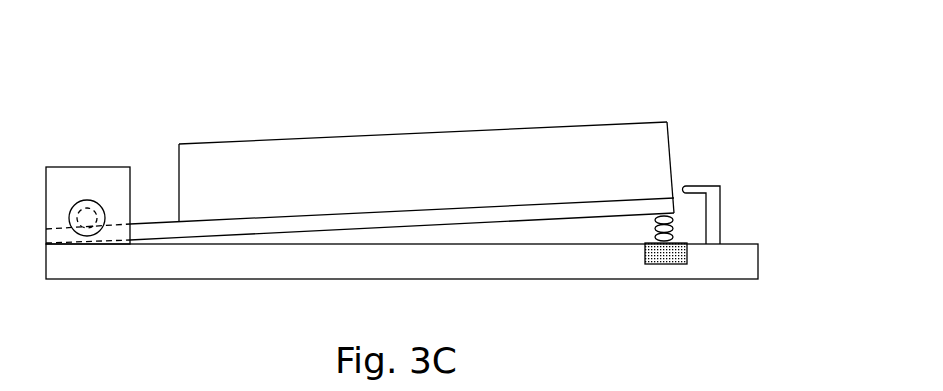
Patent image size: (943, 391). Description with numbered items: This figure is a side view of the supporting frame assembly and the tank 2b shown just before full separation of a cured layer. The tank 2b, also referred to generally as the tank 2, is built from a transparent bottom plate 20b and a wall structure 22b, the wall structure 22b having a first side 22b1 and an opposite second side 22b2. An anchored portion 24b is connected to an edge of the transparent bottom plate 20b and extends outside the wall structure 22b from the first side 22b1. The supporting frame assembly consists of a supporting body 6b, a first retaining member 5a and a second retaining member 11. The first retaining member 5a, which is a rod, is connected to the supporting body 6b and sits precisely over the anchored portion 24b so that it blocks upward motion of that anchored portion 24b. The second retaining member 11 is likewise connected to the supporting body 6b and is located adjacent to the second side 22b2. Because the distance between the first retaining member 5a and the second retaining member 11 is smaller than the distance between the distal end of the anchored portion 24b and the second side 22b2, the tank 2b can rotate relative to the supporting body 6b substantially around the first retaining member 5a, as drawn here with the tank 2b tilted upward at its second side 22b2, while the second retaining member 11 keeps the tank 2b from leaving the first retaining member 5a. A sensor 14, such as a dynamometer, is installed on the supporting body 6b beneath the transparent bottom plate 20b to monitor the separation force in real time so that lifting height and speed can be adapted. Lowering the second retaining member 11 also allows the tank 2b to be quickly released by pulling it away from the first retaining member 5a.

The tank 2 is at (425, 135).
The tank 2b is at (425, 135).
The transparent bottom plate 20b is at (514, 213).
The wall structure 22b is at (425, 134).
The first side 22b1 is at (175, 146).
The second side 22b2 is at (674, 124).
The anchored portion 24b is at (172, 230).
The first retaining member 5a is at (86, 212).
The supporting body 6b is at (610, 279).
The second retaining member 11 is at (706, 190).
The sensor 14 is at (663, 264).